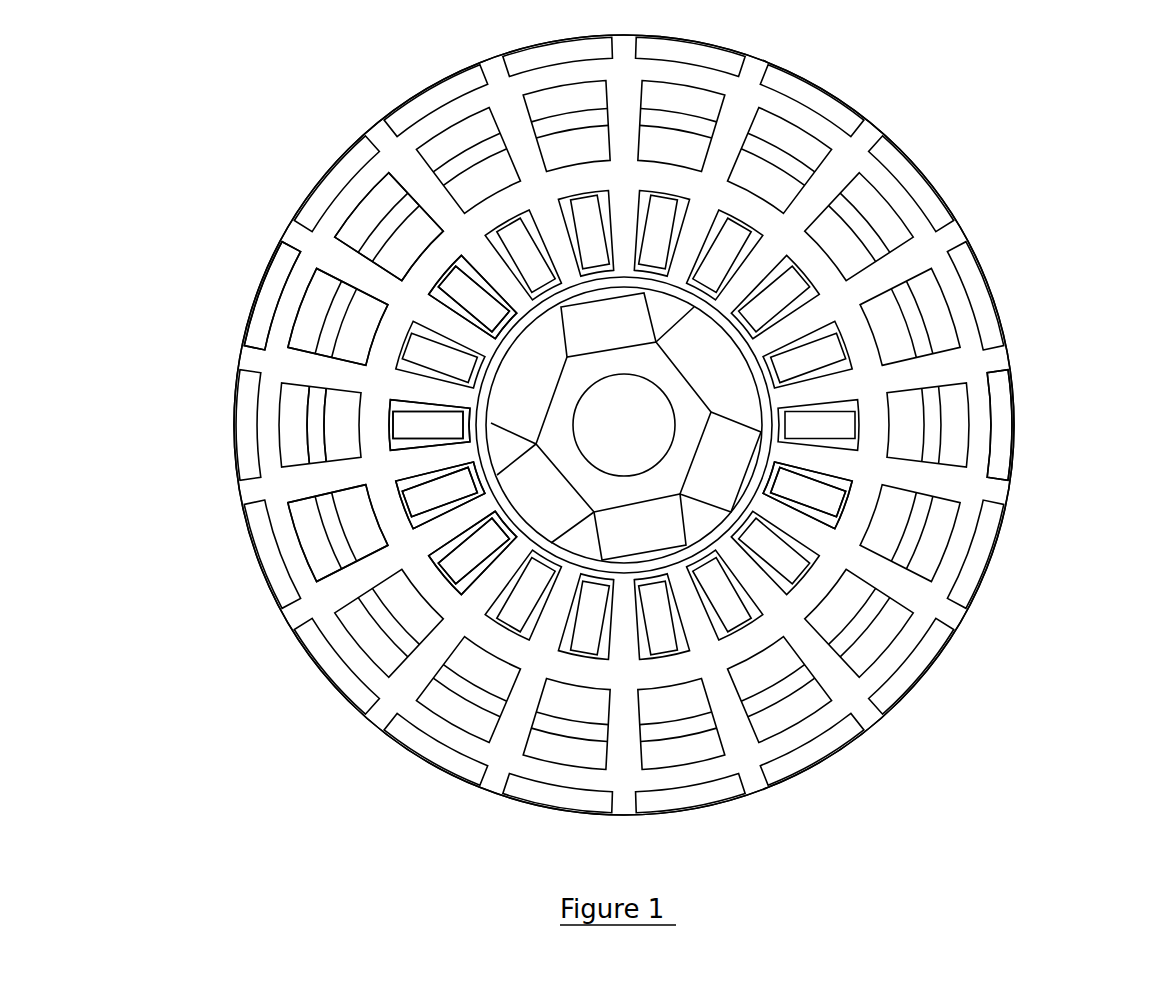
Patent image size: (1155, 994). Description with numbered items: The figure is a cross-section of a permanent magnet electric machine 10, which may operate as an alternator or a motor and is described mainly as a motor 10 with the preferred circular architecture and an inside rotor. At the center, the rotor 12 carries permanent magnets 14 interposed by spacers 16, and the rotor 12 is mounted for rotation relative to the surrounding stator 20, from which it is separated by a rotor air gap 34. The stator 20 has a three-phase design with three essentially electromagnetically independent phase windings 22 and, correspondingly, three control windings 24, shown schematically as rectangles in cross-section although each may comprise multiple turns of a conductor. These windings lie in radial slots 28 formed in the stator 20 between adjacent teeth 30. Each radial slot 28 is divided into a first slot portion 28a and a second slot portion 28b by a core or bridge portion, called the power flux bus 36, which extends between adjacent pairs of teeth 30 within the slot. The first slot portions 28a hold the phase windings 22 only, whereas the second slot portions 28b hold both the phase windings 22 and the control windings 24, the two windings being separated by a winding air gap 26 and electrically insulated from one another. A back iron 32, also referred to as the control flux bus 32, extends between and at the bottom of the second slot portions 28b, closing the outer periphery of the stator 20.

The permanent magnet electric machine 10 is at (1045, 105).
The rotor 12 is at (727, 332).
The permanent magnets 14 is at (727, 357).
The spacers 16 is at (750, 407).
The stator 20 is at (272, 225).
The phase winding 22 is at (448, 287).
The control winding 24 is at (308, 337).
The winding air gap 26 is at (317, 393).
The radial slots 28 is at (402, 443).
The first slot portion 28a is at (403, 480).
The second slot portion 28b is at (317, 490).
The teeth 30 is at (463, 514).
The back iron 32 is at (990, 418).
The rotor air gap 34 is at (762, 478).
The power flux bus 36 is at (845, 537).